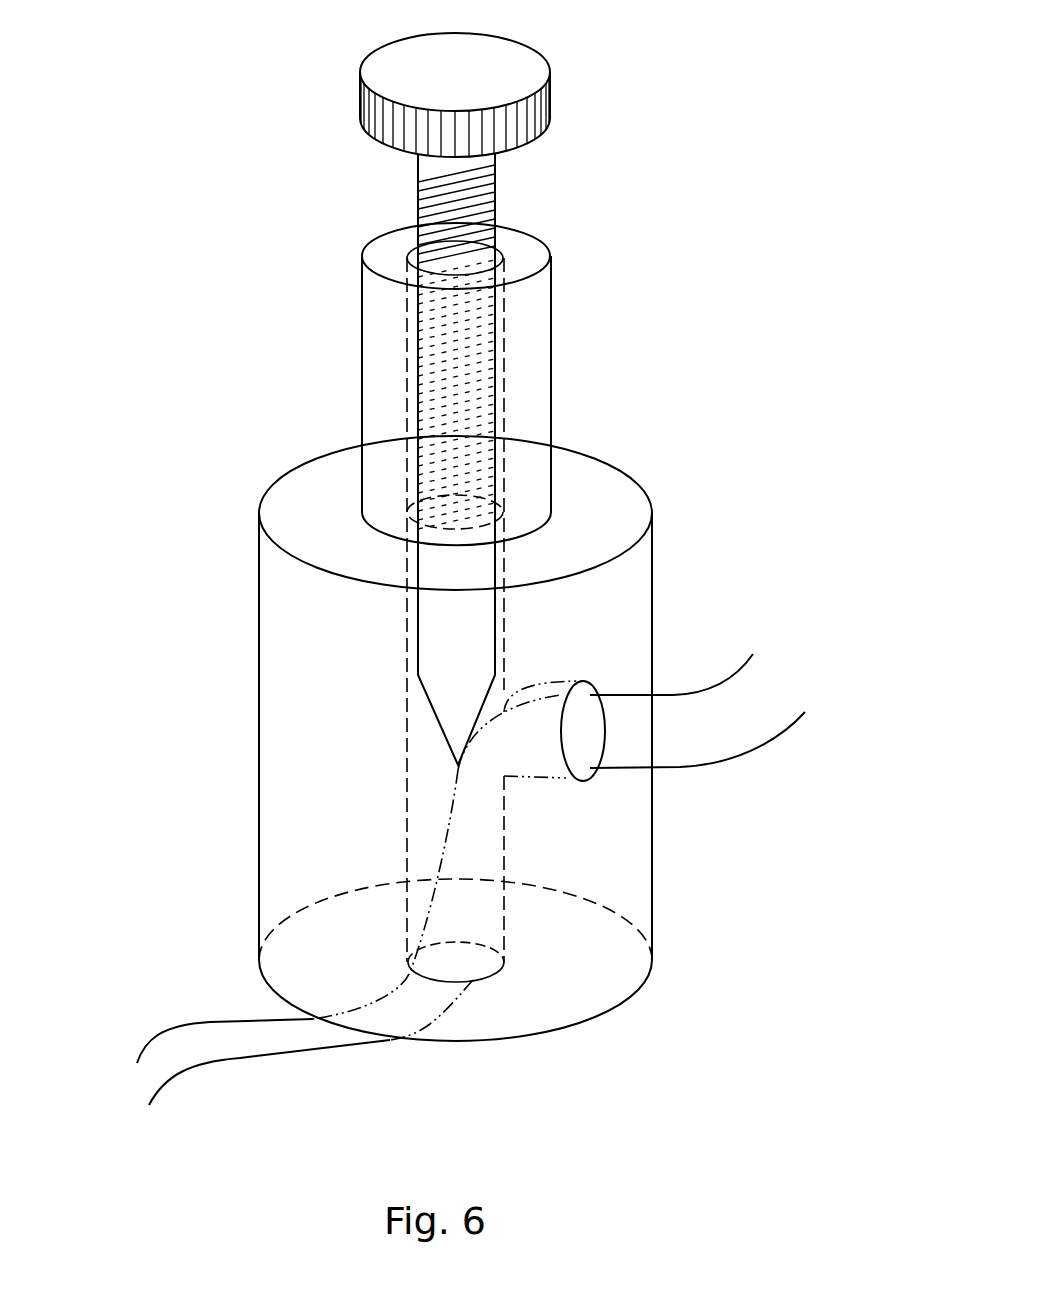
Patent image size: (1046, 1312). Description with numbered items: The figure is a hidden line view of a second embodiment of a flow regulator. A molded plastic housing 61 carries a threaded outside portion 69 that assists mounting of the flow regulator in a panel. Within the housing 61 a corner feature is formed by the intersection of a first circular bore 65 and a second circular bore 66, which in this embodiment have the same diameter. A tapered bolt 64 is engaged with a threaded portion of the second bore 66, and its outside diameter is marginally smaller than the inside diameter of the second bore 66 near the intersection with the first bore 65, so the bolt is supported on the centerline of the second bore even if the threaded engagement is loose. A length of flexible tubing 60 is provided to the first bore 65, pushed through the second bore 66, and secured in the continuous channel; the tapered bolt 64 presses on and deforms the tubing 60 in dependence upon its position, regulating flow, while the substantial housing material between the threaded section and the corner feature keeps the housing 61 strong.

The tapered bolt 64 is at (420, 195).
The threaded outside portion 69 is at (551, 346).
The housing 61 is at (259, 789).
The first circular bore 65 is at (572, 782).
The tubing 60 is at (735, 736).
The second circular bore 66 is at (507, 953).